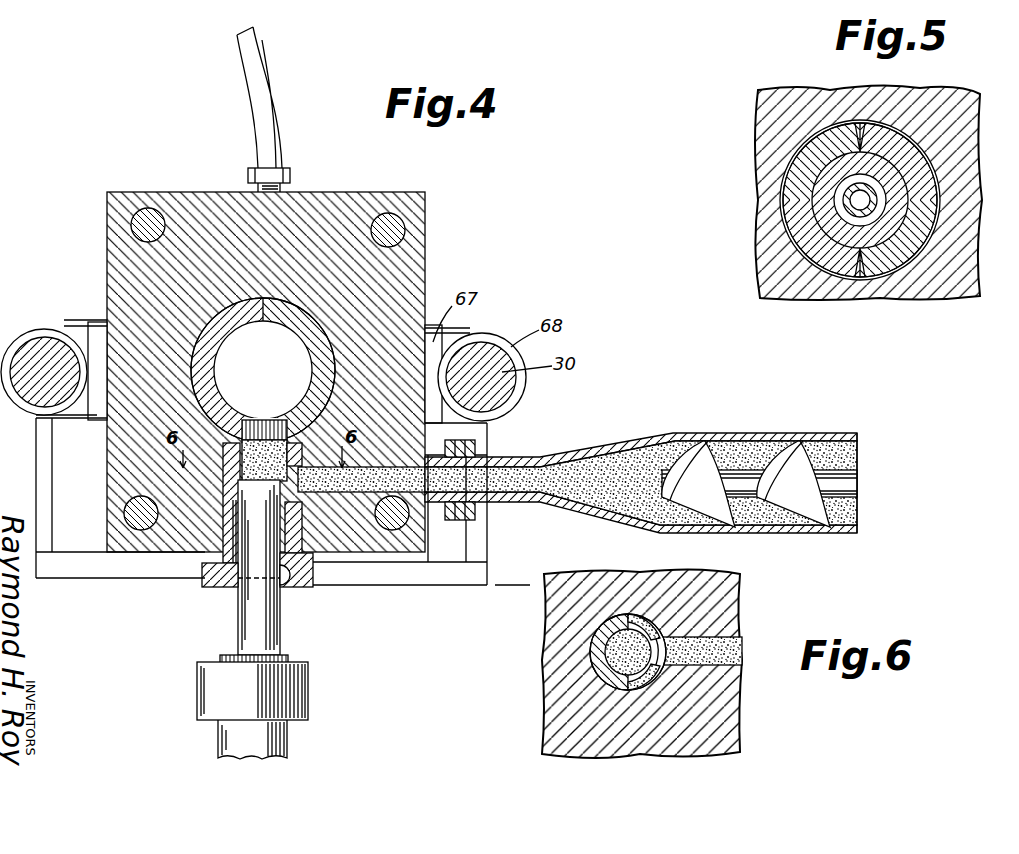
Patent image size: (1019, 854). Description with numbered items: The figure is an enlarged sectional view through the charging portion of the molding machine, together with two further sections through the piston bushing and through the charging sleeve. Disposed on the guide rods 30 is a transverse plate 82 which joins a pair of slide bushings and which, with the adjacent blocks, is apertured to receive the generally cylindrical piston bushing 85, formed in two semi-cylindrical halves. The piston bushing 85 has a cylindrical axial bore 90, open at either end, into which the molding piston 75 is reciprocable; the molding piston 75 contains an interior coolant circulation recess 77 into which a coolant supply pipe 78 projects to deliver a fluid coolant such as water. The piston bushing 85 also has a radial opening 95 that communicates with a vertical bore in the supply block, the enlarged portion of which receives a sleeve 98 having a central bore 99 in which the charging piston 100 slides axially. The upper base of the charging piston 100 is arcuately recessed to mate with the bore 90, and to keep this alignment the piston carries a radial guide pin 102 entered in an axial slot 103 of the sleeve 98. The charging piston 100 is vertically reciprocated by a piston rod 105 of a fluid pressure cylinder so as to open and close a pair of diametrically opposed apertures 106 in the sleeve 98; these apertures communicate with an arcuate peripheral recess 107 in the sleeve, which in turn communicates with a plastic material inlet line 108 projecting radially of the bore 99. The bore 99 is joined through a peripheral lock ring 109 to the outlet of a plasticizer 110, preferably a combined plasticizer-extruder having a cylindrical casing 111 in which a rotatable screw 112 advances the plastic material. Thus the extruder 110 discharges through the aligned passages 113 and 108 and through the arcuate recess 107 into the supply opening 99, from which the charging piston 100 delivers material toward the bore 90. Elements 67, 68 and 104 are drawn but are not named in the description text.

In FIG. 4, the guide rods 30 is at (59, 404).
In FIG. 4, the support plate 67 is at (96, 330).
In FIG. 4, the roller ring 68 is at (35, 330).
In FIG. 5, the molding piston 75 is at (798, 199).
In FIG. 5, the interior coolant circulation recess 77 is at (878, 212).
In FIG. 5, the coolant supply pipe 78 is at (875, 200).
In FIG. 5, the transverse plate 82 is at (809, 92).
In FIG. 4, the piston bushing 85 is at (312, 315).
In FIG. 5, the piston bushing 85 is at (804, 153).
In FIG. 4, the cylindrical axial bore 90 is at (310, 362).
In FIG. 4, the radial opening 95 is at (283, 420).
In FIG. 4, the sleeve 98 is at (313, 566).
In FIG. 6, the sleeve 98 is at (601, 641).
In FIG. 4, the central bore 99 is at (288, 582).
In FIG. 4, the charging piston 100 is at (243, 625).
In FIG. 4, the radial guide pin 102 is at (233, 584).
In FIG. 4, the axial slot 103 is at (234, 544).
In FIG. 4, the filler core 104 is at (268, 490).
In FIG. 4, the piston rod 105 is at (270, 736).
In FIG. 6, the diametrically opposed apertures 106 is at (632, 620).
In FIG. 6, the arcuate peripheral recess 107 is at (658, 670).
In FIG. 4, the plastic material inlet line 108 is at (400, 500).
In FIG. 6, the plastic material inlet line 108 is at (722, 641).
In FIG. 4, the peripheral lock ring 109 is at (473, 521).
In FIG. 4, the plasticizer 110 is at (724, 412).
In FIG. 4, the cylindrical casing 111 is at (797, 437).
In FIG. 4, the rotatable screw 112 is at (840, 489).
In FIG. 4, the passage 113 is at (528, 477).